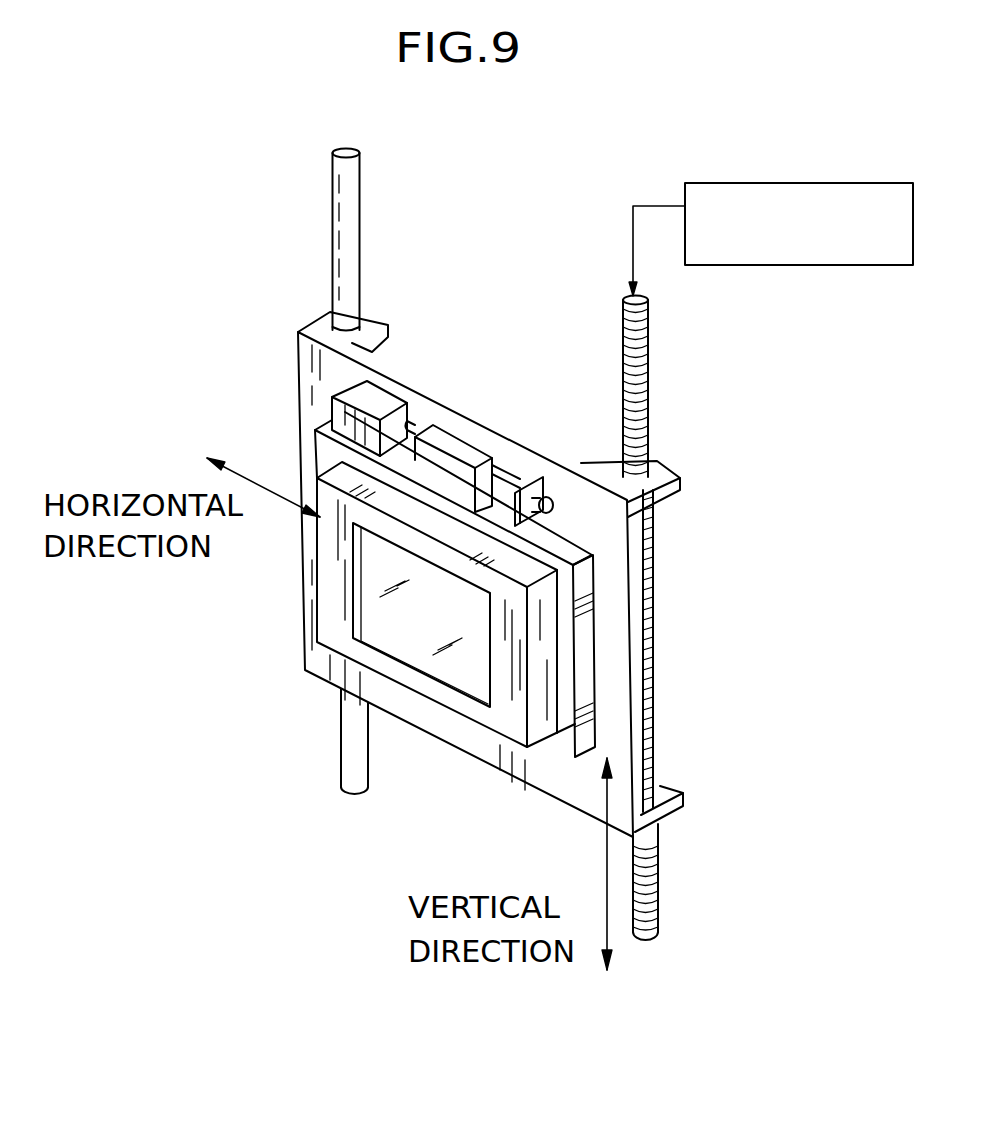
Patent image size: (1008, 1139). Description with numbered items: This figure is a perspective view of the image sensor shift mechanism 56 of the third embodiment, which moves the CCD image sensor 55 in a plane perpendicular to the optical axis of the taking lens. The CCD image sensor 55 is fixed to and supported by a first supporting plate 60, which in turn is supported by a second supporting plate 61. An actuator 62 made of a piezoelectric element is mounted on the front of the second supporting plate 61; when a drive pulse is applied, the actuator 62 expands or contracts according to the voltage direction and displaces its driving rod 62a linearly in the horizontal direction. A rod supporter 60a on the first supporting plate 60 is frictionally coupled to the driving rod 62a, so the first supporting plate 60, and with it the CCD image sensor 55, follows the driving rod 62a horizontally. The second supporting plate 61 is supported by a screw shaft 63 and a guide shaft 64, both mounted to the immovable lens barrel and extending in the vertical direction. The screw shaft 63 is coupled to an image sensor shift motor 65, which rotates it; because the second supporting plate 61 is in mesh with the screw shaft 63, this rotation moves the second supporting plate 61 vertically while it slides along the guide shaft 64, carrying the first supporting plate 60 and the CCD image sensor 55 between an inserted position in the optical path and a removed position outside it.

The CCD image sensor 55 is at (333, 587).
The image sensor shift mechanism 56 is at (171, 290).
The first supporting plate 60 is at (585, 660).
The rod supporter 60a is at (450, 438).
The second supporting plate 61 is at (603, 528).
The actuator 62 is at (332, 413).
The driving rod 62a is at (510, 462).
The screw shaft 63 is at (642, 408).
The guide shaft 64 is at (342, 270).
The image sensor shift motor 65 is at (813, 265).